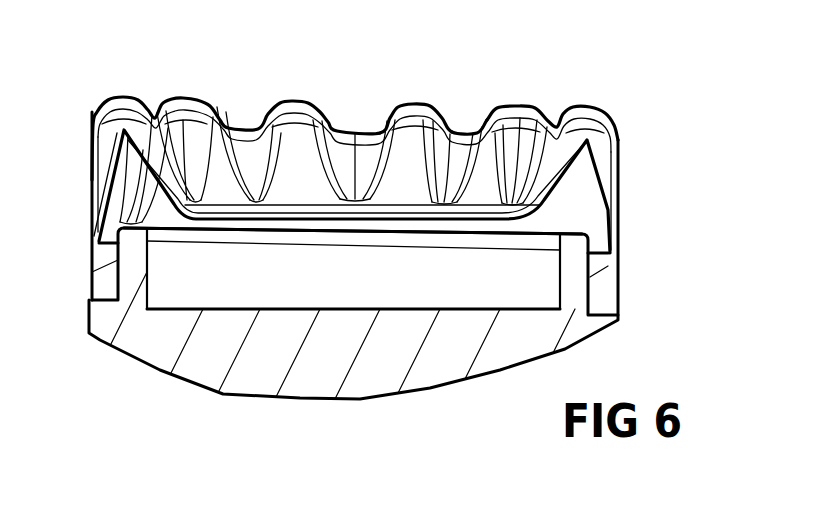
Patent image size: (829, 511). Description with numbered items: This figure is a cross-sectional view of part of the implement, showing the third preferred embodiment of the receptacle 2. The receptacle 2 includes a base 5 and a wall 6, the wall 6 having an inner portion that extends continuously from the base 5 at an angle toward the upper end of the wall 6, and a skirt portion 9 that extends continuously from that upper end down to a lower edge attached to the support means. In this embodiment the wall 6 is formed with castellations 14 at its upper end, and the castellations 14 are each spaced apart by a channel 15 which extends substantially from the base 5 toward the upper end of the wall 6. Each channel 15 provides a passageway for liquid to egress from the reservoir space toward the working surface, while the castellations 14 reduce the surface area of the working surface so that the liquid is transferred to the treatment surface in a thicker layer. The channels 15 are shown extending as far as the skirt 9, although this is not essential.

The receptacle 2 is at (633, 216).
The base 5 is at (252, 227).
The wall 6 is at (400, 140).
The skirt portion 9 is at (616, 214).
The castellations 14 is at (410, 113).
The channel 15 is at (473, 133).